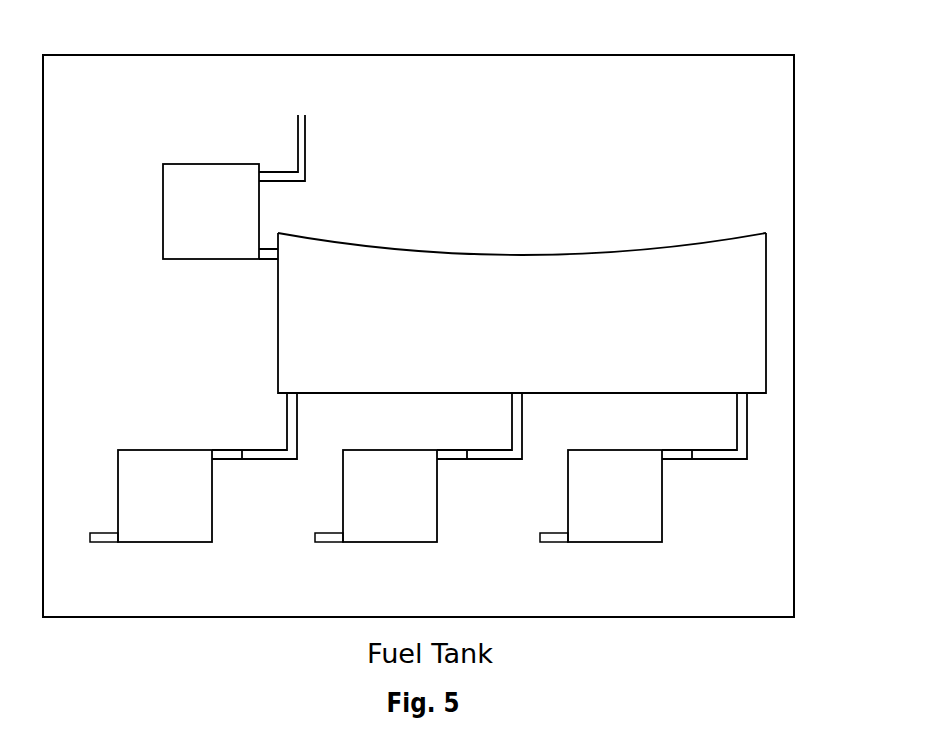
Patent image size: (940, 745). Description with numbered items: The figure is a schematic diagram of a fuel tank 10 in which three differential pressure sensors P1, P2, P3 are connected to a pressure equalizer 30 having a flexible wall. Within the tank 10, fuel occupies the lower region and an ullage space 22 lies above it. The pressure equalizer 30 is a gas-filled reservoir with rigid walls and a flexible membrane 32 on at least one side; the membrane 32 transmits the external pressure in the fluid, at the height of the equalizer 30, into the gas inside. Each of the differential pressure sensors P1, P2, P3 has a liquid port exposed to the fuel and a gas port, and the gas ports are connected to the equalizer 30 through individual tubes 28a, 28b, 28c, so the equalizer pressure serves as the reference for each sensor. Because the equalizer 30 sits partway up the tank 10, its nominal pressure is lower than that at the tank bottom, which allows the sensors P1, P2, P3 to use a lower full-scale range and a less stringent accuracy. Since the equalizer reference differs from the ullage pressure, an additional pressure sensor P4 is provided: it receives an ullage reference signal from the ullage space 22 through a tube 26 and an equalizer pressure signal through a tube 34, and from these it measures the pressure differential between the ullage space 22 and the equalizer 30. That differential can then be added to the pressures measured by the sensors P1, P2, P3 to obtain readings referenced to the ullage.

The tank 10 is at (794, 183).
The ullage space 22 is at (219, 93).
The tube 26 is at (305, 137).
The tube 28a is at (297, 434).
The tube 28b is at (522, 434).
The tube 28c is at (747, 431).
The pressure equalizer 30 is at (766, 335).
The flexible membrane 32 is at (672, 239).
The tube 34 is at (278, 262).
The differential pressure sensor P1 is at (170, 542).
The differential pressure sensor P2 is at (395, 542).
The differential pressure sensor P3 is at (613, 542).
The pressure sensor P4 is at (163, 215).